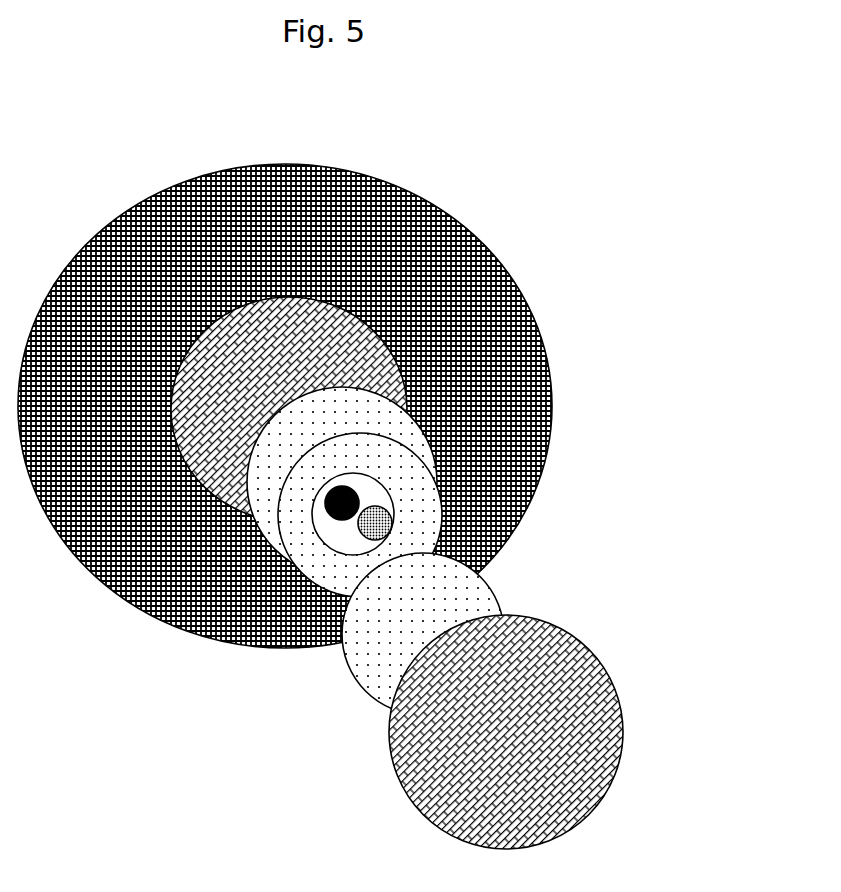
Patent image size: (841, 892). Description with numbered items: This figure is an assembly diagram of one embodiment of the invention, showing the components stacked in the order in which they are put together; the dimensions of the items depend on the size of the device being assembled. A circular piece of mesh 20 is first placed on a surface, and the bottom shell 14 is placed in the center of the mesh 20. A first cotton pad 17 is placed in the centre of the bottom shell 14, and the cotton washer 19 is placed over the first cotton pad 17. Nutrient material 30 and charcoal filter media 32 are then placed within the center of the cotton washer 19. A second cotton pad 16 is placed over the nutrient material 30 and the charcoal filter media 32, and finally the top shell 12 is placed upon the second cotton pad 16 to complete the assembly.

The top shell 12 is at (383, 757).
The bottom shell 14 is at (400, 361).
The second cotton pad 16 is at (477, 597).
The first cotton pad 17 is at (323, 428).
The cotton washer 19 is at (420, 497).
The mesh 20 is at (440, 272).
The nutrient material 30 is at (347, 487).
The charcoal filter media 32 is at (393, 520).